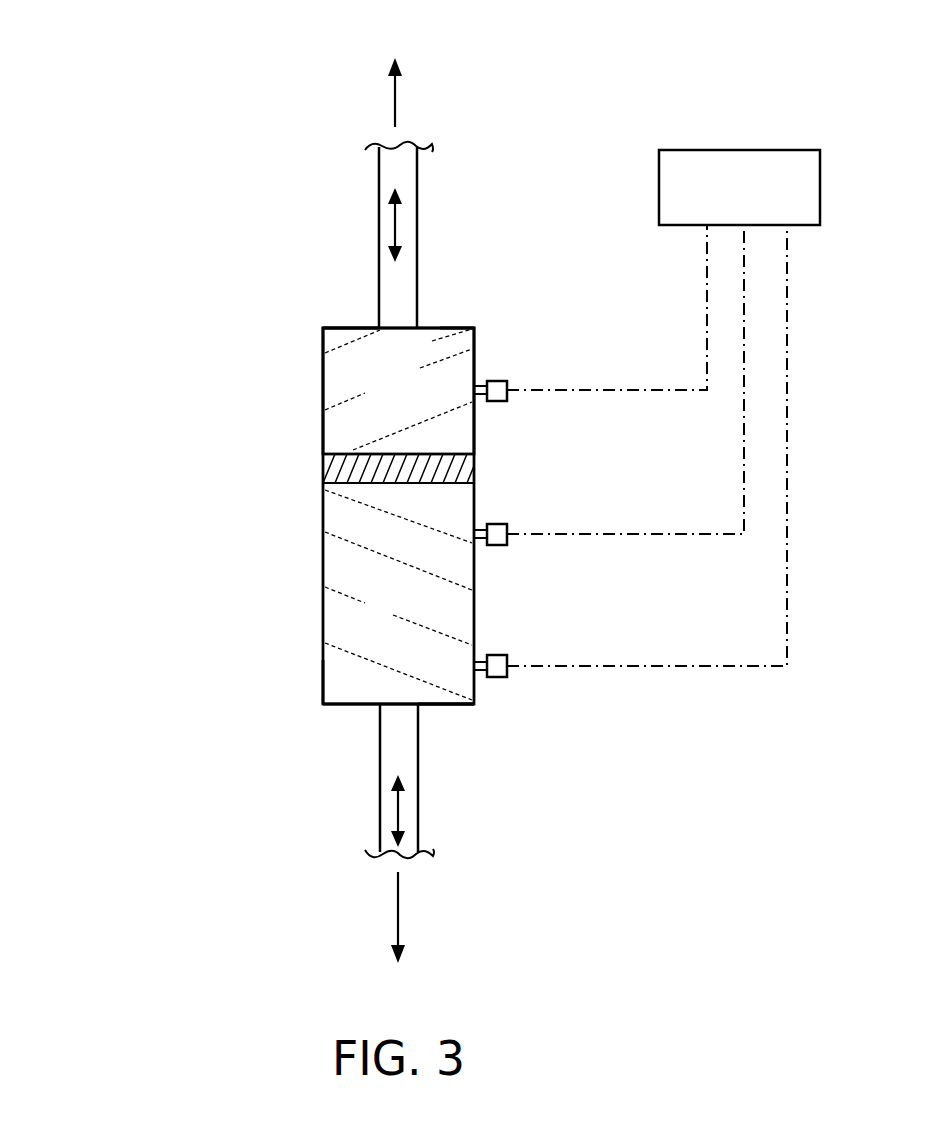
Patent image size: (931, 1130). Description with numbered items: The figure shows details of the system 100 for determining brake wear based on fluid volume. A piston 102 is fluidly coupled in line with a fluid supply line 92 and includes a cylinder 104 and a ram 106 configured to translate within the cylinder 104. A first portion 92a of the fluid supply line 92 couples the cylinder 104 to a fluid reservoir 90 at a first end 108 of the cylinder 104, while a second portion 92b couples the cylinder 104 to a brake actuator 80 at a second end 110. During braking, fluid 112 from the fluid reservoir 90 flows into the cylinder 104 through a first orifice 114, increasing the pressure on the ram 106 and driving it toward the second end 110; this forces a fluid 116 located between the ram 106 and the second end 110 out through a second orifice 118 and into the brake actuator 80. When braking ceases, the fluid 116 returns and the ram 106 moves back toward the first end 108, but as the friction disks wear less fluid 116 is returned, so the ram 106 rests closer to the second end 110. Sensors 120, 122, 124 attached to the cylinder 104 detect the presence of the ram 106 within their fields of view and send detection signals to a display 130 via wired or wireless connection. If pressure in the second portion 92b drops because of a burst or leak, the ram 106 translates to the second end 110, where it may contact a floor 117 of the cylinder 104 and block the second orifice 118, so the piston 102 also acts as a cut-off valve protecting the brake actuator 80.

The system 100 is at (102, 112).
The piston 102 is at (310, 516).
The cylinder 104 is at (323, 400).
The ram 106 is at (348, 456).
The first end 108 is at (459, 327).
The second end 110 is at (357, 706).
The fluid 112 is at (398, 225).
The first orifice 114 is at (368, 319).
The fluid 116 is at (396, 808).
The floor 117 is at (333, 701).
The second orifice 118 is at (426, 712).
The sensor 120 is at (500, 401).
The sensor 122 is at (500, 545).
The sensor 124 is at (500, 677).
The display 130 is at (754, 199).
The fluid reservoir 90 is at (395, 80).
The brake actuator 80 is at (399, 933).
The fluid supply line 92 is at (403, 470).
The first portion 92a is at (380, 212).
The second portion 92b is at (418, 806).